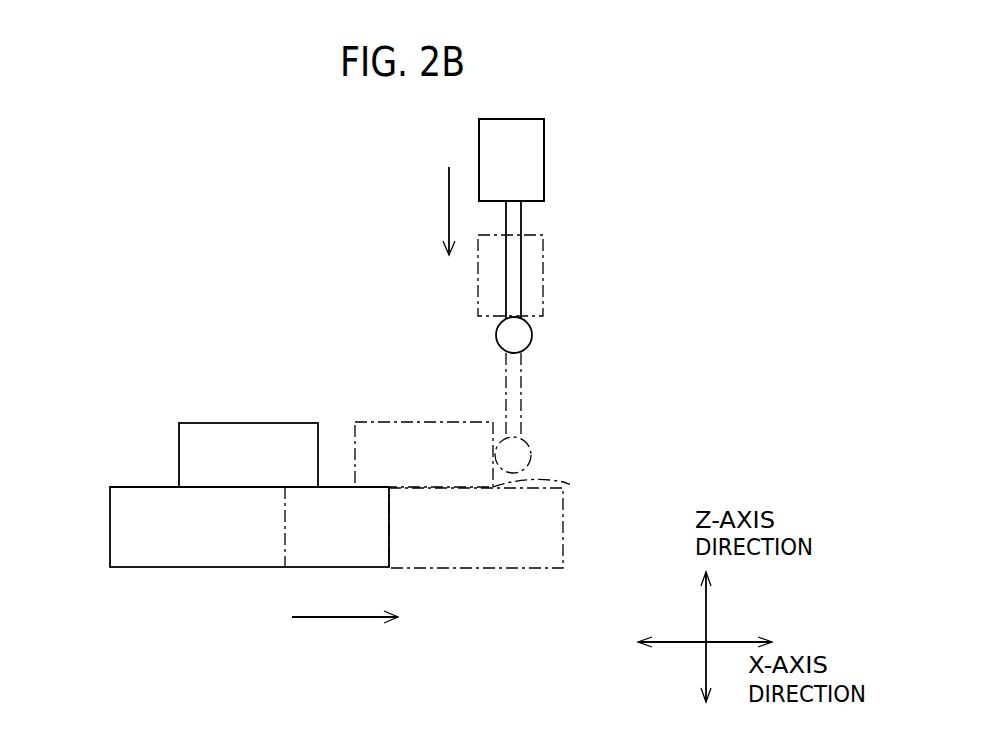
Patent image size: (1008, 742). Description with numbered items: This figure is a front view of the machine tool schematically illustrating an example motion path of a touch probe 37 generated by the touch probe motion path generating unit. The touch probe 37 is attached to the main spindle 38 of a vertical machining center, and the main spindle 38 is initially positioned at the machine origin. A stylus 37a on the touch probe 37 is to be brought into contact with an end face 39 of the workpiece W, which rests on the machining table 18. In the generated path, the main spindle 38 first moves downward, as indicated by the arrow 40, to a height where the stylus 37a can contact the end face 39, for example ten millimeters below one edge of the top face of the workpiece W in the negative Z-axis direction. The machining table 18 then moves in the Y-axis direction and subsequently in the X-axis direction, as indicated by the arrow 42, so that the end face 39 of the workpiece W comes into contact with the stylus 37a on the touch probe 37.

The machining table 18 is at (150, 568).
The touch probe 37 is at (514, 226).
The stylus 37a is at (531, 330).
The main spindle 38 is at (544, 134).
The end face 39 is at (318, 437).
The arrow 40 is at (448, 198).
The arrow 42 is at (340, 617).
The workpiece W is at (195, 428).